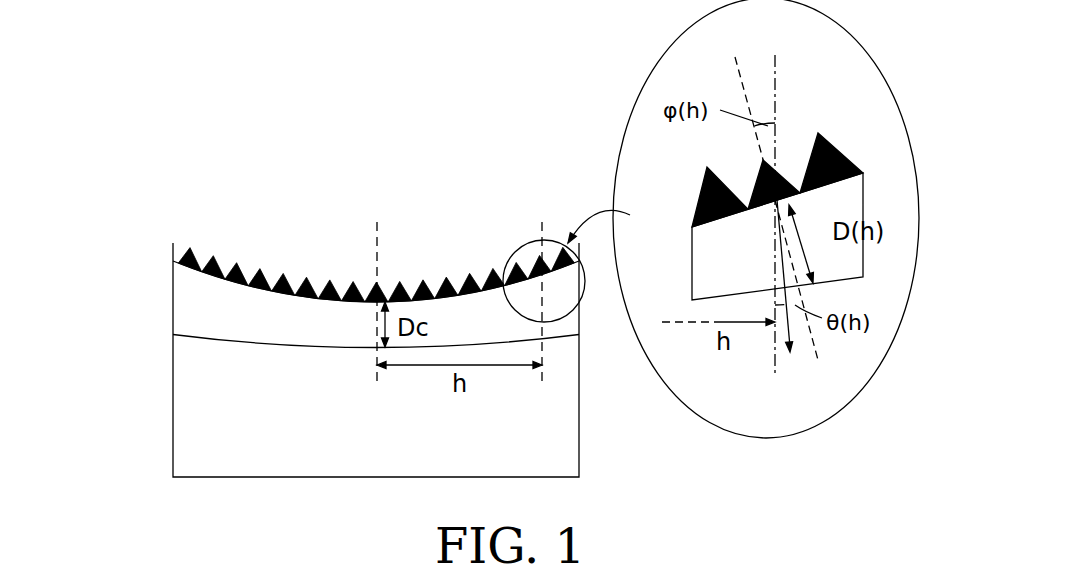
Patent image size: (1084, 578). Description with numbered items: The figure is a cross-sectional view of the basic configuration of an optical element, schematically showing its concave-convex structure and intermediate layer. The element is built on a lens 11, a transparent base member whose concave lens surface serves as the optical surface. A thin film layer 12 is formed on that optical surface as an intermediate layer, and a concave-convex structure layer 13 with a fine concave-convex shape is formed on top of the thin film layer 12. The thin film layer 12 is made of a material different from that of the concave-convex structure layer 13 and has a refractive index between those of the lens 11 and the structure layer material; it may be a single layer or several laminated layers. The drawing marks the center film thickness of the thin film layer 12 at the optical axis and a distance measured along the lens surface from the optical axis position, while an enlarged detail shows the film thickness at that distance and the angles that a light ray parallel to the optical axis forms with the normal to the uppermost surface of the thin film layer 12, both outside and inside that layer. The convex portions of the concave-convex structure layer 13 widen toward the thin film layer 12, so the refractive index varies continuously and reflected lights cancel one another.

The lens 11 is at (187, 361).
The thin film layer 12 is at (187, 292).
The concave-convex structure layer 13 is at (187, 257).